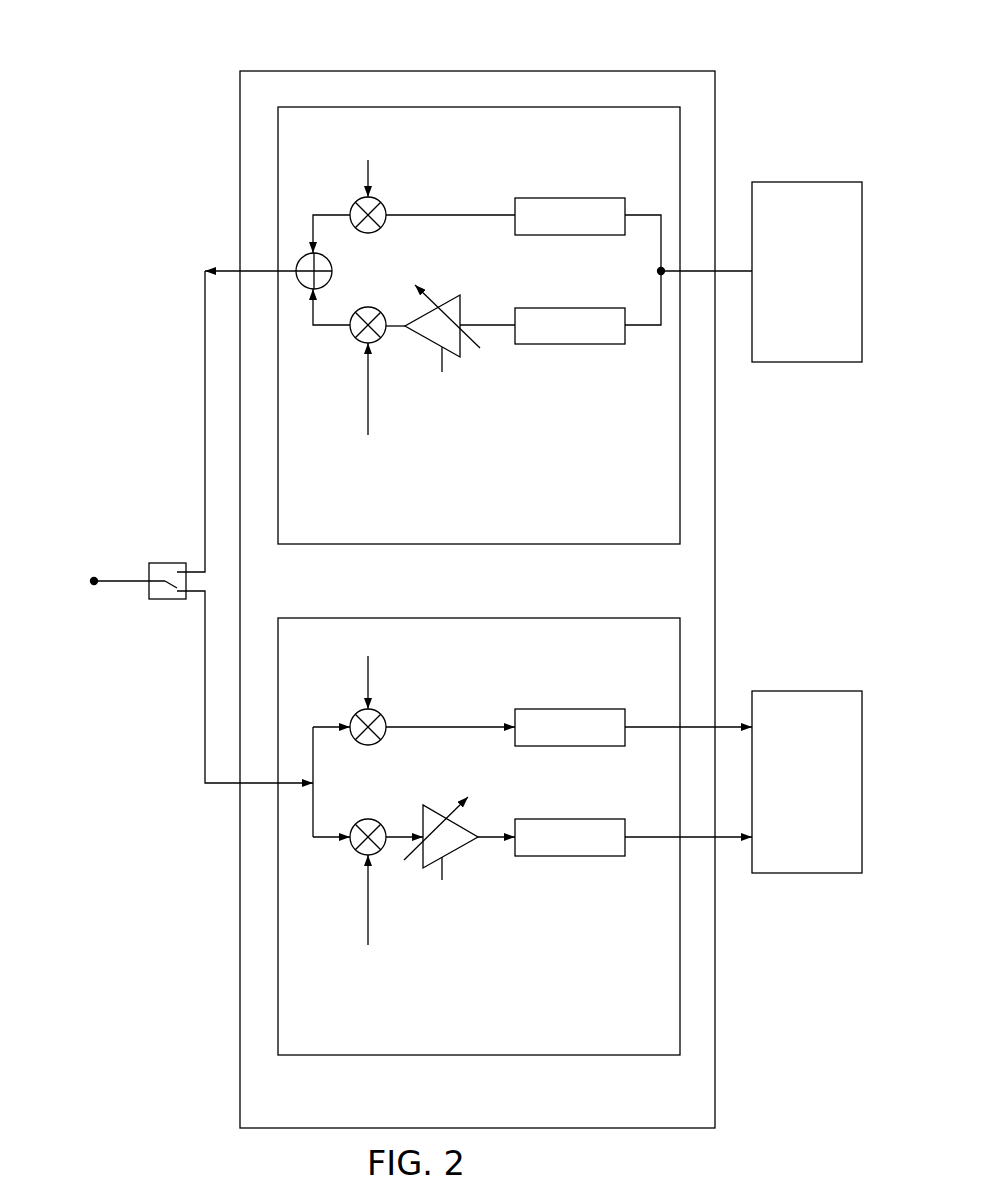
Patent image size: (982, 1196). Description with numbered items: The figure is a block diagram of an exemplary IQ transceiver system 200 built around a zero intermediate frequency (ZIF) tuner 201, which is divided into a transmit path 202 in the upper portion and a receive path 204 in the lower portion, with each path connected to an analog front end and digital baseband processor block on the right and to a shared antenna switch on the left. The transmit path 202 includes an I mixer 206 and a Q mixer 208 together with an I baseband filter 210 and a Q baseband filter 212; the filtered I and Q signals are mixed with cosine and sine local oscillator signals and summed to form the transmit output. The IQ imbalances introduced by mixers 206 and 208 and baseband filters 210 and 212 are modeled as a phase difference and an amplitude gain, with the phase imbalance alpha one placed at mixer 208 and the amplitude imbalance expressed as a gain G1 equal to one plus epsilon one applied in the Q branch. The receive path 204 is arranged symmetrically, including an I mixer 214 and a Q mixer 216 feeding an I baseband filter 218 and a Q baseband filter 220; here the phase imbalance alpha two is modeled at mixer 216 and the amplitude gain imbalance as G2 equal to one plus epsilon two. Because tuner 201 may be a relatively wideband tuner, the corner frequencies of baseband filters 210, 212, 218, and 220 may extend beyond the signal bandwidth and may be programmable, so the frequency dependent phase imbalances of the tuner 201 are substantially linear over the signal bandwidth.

The IQ transceiver system 200 is at (120, 38).
The ZIF tuner 201 is at (464, 599).
The transmit path 202 is at (442, 325).
The receive path 204 is at (479, 836).
The I mixer 206 is at (404, 201).
The Q mixer 208 is at (377, 301).
The I baseband filter 210 is at (570, 190).
The Q baseband filter 212 is at (570, 300).
The I mixer 214 is at (390, 708).
The Q mixer 216 is at (381, 813).
The I baseband filter 218 is at (570, 704).
The Q baseband filter 220 is at (570, 813).